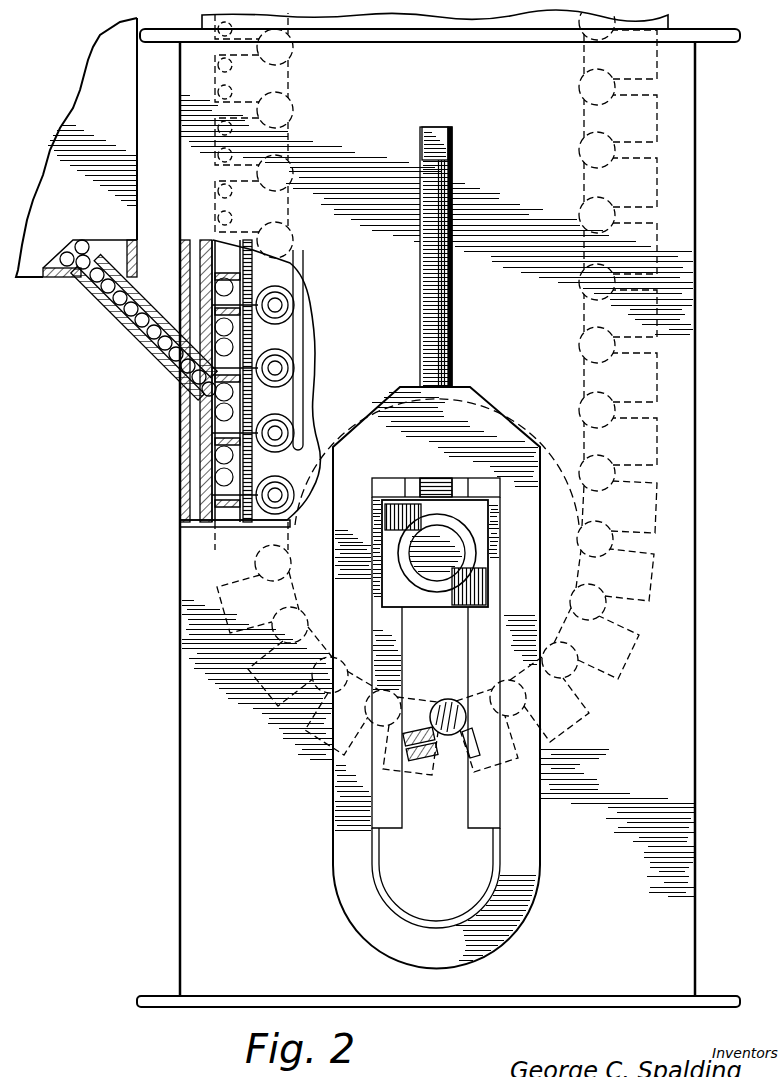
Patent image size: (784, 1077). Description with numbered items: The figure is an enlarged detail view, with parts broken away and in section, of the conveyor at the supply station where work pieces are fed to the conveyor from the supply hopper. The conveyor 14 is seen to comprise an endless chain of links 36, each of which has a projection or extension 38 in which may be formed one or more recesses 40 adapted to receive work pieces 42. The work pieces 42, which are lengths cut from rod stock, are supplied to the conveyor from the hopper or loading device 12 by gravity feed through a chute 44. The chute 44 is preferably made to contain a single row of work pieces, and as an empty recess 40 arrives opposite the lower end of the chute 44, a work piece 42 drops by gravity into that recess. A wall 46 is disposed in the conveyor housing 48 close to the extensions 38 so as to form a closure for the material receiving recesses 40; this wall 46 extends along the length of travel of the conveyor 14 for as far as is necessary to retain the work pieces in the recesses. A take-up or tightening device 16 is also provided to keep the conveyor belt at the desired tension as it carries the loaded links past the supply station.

The loading device 12 is at (32, 250).
The conveyor 14 is at (664, 315).
The take-up or tightening device 16 is at (330, 810).
The links 36 is at (285, 345).
The projection or extension 38 is at (250, 428).
The recesses 40 is at (220, 478).
The work pieces 42 is at (205, 388).
The chute 44 is at (128, 333).
The wall 46 is at (205, 277).
The conveyor housing 48 is at (193, 541).